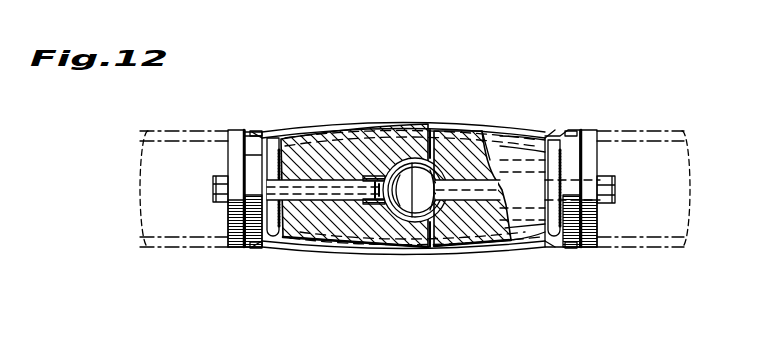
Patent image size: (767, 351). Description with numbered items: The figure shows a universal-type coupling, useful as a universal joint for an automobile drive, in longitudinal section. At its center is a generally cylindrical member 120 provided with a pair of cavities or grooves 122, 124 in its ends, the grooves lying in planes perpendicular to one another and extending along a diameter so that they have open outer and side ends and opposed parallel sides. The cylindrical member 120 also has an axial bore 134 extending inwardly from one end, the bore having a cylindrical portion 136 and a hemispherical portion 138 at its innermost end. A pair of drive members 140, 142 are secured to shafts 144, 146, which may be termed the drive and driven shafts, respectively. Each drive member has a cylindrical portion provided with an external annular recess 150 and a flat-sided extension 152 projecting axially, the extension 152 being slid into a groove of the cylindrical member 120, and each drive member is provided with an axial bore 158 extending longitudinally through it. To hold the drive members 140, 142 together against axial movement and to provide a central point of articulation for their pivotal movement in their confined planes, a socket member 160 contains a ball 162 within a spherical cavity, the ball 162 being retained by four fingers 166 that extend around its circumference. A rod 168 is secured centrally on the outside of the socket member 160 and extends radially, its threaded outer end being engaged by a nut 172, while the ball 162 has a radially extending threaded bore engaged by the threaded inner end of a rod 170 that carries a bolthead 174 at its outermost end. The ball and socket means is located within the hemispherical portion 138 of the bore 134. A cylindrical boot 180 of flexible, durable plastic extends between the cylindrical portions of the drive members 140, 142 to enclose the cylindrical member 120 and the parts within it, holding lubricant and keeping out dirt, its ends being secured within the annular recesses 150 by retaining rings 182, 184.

The cylindrical member 120 is at (413, 134).
The groove 122 is at (316, 188).
The groove 124 is at (490, 146).
The axial bore 134 is at (523, 125).
The cylindrical portion 136 is at (484, 242).
The hemispherical portion 138 is at (378, 142).
The drive member 140 is at (598, 132).
The drive member 142 is at (237, 131).
The shaft 144 is at (662, 240).
The shaft 146 is at (158, 131).
The external annular recess 150 is at (571, 148).
The flat-sided extension 152 is at (522, 240).
The axial bore 158 is at (450, 165).
The socket member 160 is at (450, 240).
The ball 162 is at (372, 230).
The fingers 166 is at (395, 226).
The rod 168 is at (562, 184).
The rod 170 is at (235, 206).
The nut 172 is at (617, 194).
The bolthead 174 is at (225, 178).
The cylindrical boot 180 is at (281, 130).
The retaining ring 182 is at (571, 250).
The retaining ring 184 is at (257, 250).